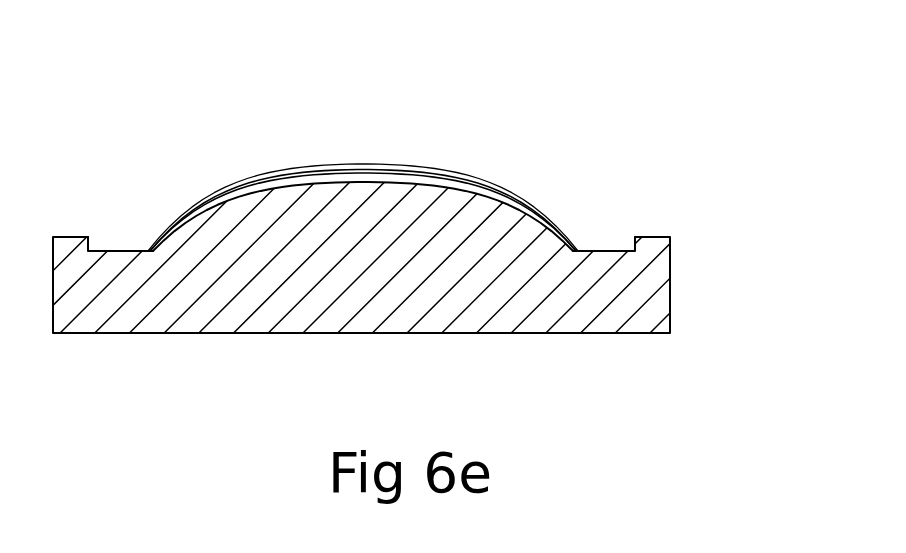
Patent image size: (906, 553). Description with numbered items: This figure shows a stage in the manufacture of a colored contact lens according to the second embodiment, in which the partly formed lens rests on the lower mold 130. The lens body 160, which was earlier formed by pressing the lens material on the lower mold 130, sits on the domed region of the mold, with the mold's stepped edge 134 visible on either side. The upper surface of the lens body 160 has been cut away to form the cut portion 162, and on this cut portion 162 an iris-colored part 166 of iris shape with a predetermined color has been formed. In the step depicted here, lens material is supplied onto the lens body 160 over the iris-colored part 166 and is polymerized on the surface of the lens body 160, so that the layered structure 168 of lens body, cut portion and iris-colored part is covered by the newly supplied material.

The lower mold 130 is at (653, 289).
The recess 134 is at (613, 250).
The lens body 160 is at (382, 176).
The cut portion 162 is at (310, 167).
The iris-colored part 166 is at (508, 193).
The lens assembly 168 is at (394, 134).